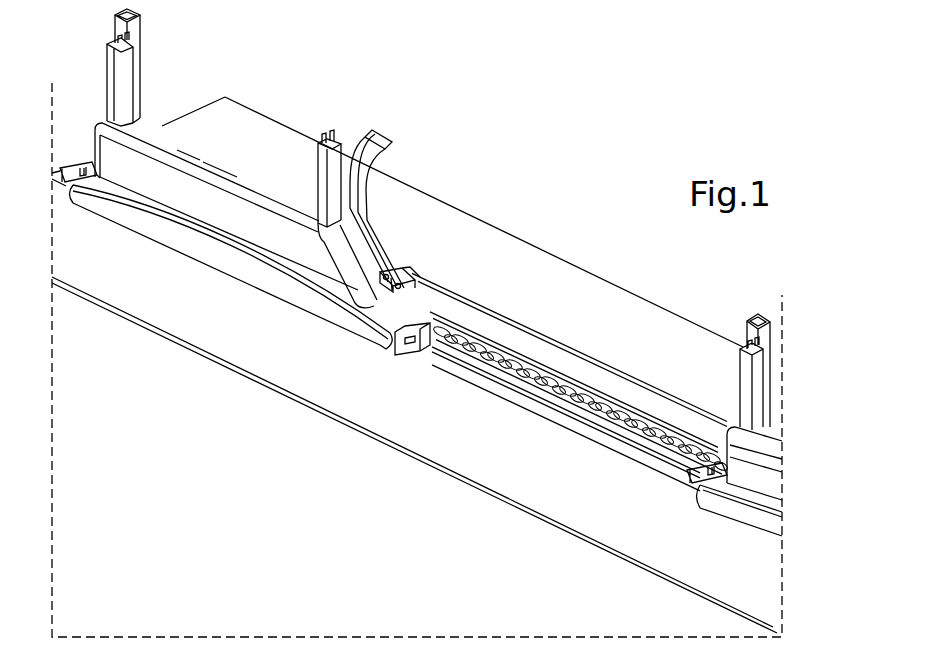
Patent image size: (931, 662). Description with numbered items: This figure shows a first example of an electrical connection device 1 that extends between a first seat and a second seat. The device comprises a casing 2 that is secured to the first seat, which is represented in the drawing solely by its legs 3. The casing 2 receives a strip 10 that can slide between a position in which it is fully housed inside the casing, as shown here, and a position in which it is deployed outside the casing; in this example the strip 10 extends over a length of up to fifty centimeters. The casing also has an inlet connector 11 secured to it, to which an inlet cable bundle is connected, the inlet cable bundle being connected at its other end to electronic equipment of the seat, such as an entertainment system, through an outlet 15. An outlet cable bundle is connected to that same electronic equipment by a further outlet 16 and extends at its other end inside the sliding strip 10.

The electrical connection device 1 is at (527, 141).
The casing 2 is at (245, 233).
The legs 3 is at (143, 15).
The strip 10 is at (410, 340).
The inlet connector 11 is at (60, 166).
The outlet 15 is at (127, 50).
The outlet 16 is at (333, 140).